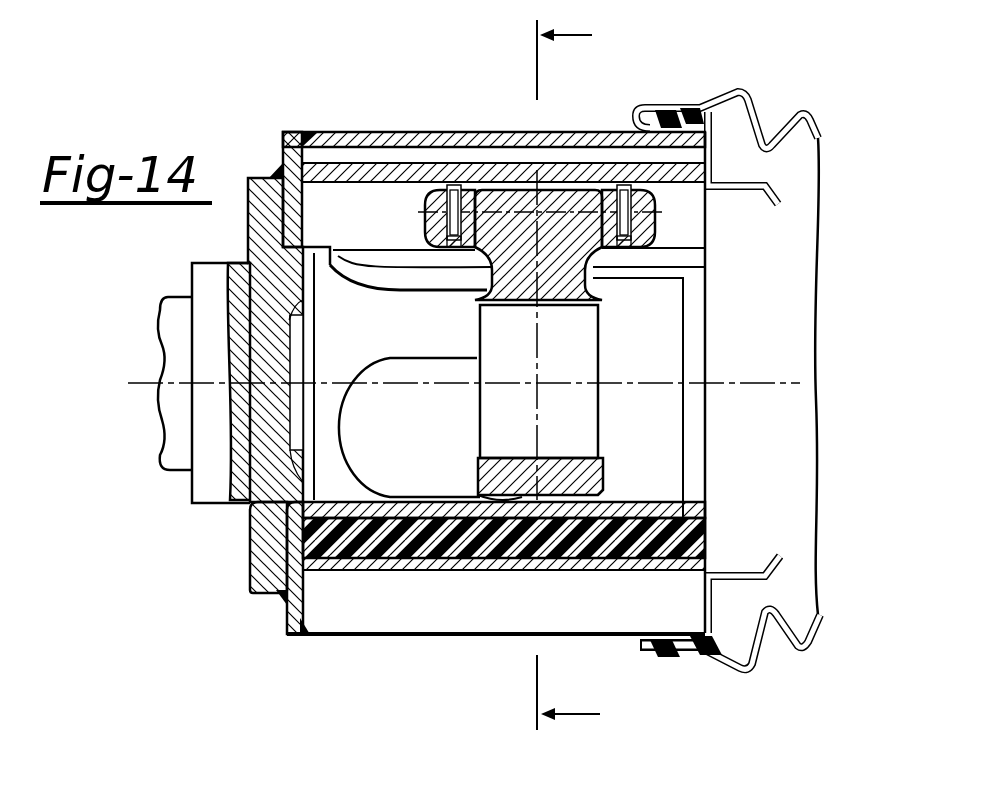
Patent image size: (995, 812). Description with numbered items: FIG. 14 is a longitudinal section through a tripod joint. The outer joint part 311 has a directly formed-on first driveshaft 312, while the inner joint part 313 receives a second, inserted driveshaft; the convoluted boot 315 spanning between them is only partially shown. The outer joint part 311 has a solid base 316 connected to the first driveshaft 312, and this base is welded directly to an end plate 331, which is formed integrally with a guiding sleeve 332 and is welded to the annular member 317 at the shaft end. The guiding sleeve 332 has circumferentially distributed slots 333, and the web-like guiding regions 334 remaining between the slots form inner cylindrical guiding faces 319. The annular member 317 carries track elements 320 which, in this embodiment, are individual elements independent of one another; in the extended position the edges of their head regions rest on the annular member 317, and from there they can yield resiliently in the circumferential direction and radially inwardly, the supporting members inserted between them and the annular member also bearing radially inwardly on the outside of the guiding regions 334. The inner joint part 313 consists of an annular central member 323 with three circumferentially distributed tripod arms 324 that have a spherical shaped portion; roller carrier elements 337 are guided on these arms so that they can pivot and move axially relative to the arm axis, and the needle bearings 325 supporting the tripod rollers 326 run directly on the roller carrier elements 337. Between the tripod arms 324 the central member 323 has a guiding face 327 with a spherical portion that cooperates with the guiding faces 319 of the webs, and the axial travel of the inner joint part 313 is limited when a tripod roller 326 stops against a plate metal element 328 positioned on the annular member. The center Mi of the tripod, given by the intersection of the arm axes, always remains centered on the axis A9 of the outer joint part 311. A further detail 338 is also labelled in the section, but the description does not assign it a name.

The outer joint part 311 is at (266, 152).
The first driveshaft 312 is at (172, 337).
The inner joint part 313 is at (692, 228).
The convoluted boot 315 is at (815, 135).
The solid base 316 is at (248, 252).
The annular member 317 is at (358, 138).
The inner cylindrical guiding faces 319 is at (466, 506).
The track elements 320 is at (398, 200).
The annular central member 323 is at (500, 486).
The tripod arms 324 is at (515, 205).
The needle bearings 325 is at (656, 225).
The tripod rollers 326 is at (710, 125).
The guiding face 327 is at (606, 462).
The plate metal element 328 is at (738, 577).
The end plate 331 is at (285, 597).
The guiding sleeve 332 is at (330, 510).
The slots 333 is at (376, 467).
The guiding regions 334 is at (426, 505).
The roller carrier elements 337 is at (618, 192).
The neck 338 is at (598, 242).
The axis of the outer joint part A9 is at (140, 395).
The center of the tripod Mi is at (540, 383).